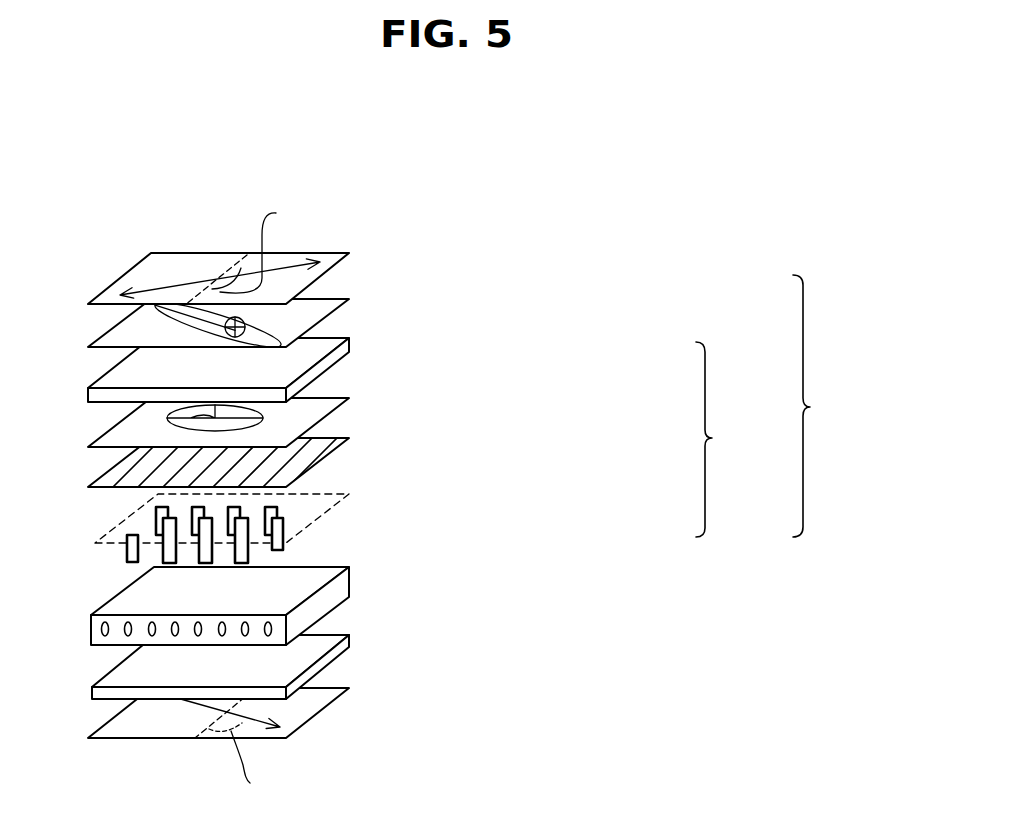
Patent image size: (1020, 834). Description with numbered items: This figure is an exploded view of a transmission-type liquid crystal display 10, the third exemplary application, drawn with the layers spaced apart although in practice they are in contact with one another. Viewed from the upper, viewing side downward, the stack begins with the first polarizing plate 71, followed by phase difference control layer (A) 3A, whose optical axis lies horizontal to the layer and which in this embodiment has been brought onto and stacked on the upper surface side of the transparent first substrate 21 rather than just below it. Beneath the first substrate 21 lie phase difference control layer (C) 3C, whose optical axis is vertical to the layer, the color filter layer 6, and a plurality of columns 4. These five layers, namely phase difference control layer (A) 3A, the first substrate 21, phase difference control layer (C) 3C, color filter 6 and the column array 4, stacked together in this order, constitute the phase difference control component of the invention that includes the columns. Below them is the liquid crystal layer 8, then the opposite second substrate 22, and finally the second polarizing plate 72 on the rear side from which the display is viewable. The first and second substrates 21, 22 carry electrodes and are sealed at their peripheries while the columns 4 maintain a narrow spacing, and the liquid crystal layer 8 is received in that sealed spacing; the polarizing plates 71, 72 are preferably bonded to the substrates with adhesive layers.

The liquid crystal display 10 is at (66, 247).
The polarizing plate (1) 71 is at (349, 253).
The phase difference control layer (A) 3A is at (349, 299).
The substrate (1) 21 is at (695, 355).
The phase difference control layer (C) 3C is at (349, 398).
The color filter layer 6 is at (349, 438).
The columns 4 is at (318, 518).
The liquid crystal layer 8 is at (349, 589).
The substrate (2) 22 is at (349, 644).
The polarizing plate (2) 72 is at (349, 689).